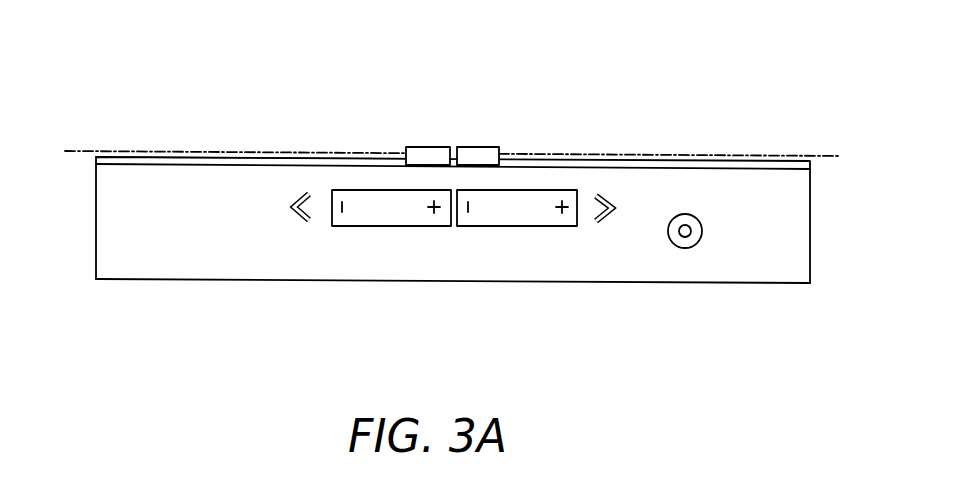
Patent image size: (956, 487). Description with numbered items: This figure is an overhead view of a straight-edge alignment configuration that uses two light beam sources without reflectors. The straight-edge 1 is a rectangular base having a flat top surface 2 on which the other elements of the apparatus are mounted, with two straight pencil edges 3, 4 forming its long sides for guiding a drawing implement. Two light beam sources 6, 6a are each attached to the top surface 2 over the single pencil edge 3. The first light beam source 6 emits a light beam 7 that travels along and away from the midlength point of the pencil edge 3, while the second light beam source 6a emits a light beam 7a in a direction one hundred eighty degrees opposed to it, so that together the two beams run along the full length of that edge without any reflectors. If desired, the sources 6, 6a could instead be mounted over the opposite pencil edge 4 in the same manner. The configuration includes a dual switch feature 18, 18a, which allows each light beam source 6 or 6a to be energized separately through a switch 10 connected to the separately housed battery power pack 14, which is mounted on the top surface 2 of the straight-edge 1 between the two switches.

The straight-edge 1 is at (96, 214).
The flat top surface 2 is at (147, 239).
The pencil edge 3 is at (195, 156).
The pencil edge 4 is at (317, 283).
The first light beam source 6 is at (492, 147).
The second light beam source 6a is at (424, 147).
The light beam 7 is at (540, 153).
The light beam 7a is at (340, 152).
The switch 10 is at (685, 237).
The battery power pack 14 is at (479, 218).
The dual switch feature 18 is at (614, 208).
The dual switch feature 18a is at (291, 206).